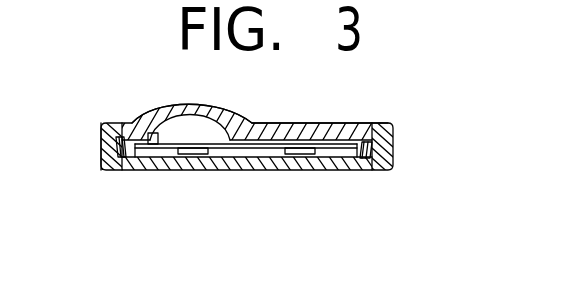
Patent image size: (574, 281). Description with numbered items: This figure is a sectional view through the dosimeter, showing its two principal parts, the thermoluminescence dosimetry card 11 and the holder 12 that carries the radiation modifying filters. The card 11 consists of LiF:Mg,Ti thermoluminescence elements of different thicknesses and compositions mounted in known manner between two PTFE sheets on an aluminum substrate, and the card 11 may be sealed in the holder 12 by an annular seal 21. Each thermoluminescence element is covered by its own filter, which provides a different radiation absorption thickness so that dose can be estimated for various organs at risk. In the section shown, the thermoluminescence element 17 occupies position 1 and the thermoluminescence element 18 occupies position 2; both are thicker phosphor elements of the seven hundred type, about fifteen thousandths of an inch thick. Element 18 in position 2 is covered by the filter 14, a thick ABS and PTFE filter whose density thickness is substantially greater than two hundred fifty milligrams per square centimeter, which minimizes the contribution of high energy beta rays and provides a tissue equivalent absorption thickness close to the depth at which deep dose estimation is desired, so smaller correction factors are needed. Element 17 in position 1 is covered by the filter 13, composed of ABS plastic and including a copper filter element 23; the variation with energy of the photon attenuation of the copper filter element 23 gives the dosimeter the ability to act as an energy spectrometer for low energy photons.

The position 1 is at (320, 101).
The position 2 is at (247, 114).
The thermoluminescence dosimetry card 11 is at (257, 150).
The holder 12 is at (393, 146).
The filter 13 is at (328, 123).
The filter 14 is at (168, 108).
The thermoluminescence element 17 is at (293, 154).
The thermoluminescence element 18 is at (202, 154).
The annular seal 21 is at (127, 168).
The copper filter element 23 is at (280, 123).